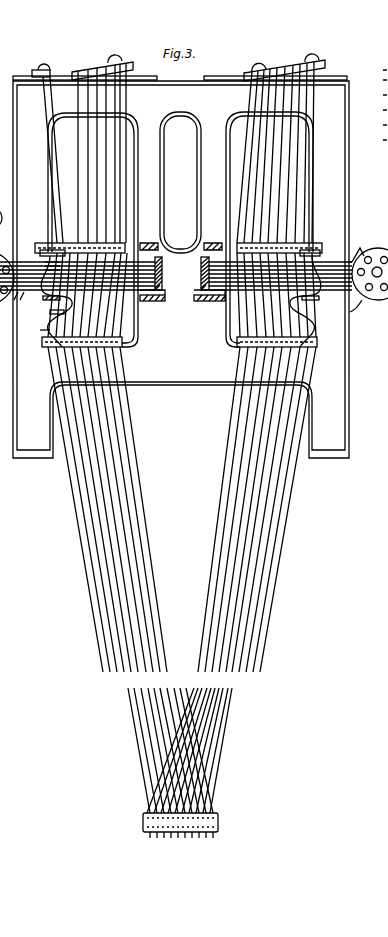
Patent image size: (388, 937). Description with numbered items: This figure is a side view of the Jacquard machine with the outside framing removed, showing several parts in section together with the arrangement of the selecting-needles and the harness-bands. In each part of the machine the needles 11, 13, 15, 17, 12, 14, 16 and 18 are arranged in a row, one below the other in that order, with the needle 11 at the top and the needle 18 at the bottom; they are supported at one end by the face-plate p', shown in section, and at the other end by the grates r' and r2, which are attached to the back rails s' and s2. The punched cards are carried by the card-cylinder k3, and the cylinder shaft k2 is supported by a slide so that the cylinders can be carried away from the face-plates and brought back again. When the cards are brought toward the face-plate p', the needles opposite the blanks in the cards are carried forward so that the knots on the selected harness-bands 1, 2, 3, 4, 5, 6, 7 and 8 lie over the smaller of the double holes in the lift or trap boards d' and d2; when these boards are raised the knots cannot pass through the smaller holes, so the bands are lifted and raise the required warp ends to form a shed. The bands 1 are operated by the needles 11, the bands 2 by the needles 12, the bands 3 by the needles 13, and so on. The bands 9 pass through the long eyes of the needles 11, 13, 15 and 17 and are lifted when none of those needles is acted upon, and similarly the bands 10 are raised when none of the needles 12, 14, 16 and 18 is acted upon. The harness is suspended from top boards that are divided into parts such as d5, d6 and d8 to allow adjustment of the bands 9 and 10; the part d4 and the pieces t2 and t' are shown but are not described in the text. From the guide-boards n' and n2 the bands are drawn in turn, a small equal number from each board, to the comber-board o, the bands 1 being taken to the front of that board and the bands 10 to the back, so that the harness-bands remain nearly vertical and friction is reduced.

The top board part d5 is at (44, 70).
The left thread guide bar d4 is at (133, 65).
The top board part d6 is at (258, 70).
The top board part d8 is at (325, 62).
The lift or trap board d2 is at (58, 243).
The lift or trap board d' is at (278, 238).
The guide-board n2 is at (135, 343).
The guide-board n' is at (281, 350).
The needle 11 is at (48, 262).
The needle 12 is at (43, 298).
The needle 13 is at (46, 262).
The needle 14 is at (44, 305).
The needle 15 is at (48, 258).
The needle 16 is at (48, 328).
The needle 17 is at (50, 262).
The needle 18 is at (58, 312).
The harness-band 1 is at (134, 456).
The harness-band 2 is at (129, 472).
The harness-band 3 is at (125, 487).
The harness-band 4 is at (119, 500).
The harness-band 5 is at (113, 512).
The harness-band 6 is at (78, 520).
The harness-band 7 is at (89, 538).
The harness-band 8 is at (99, 555).
The harness-band 9 is at (109, 573).
The harness-band 10 is at (120, 592).
The left clamp block t2 is at (164, 273).
The right clamp block t' is at (195, 273).
The grate r2 is at (156, 292).
The grate r' is at (202, 292).
The back rail s2 is at (165, 301).
The back rail s' is at (209, 306).
The cylinder shaft k2 is at (364, 256).
The card-cylinder k3 is at (372, 249).
The face-plate p' is at (359, 311).
The comber-board o is at (218, 822).